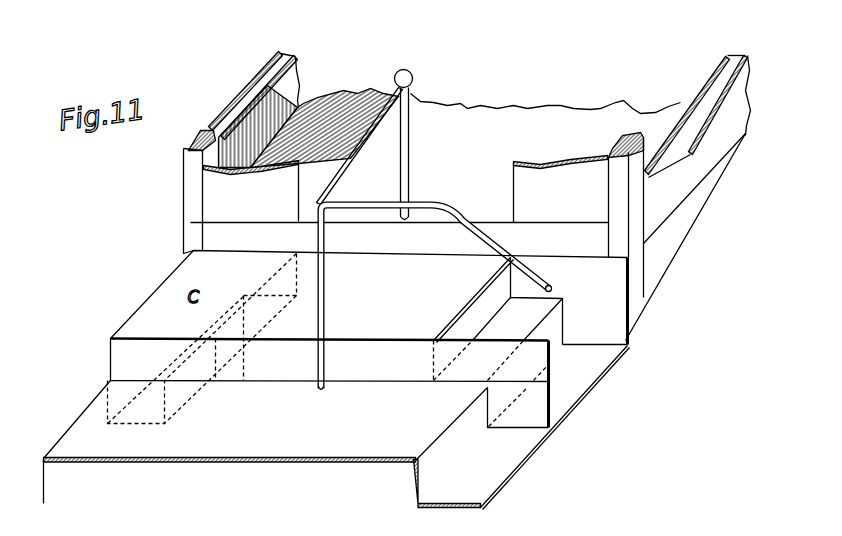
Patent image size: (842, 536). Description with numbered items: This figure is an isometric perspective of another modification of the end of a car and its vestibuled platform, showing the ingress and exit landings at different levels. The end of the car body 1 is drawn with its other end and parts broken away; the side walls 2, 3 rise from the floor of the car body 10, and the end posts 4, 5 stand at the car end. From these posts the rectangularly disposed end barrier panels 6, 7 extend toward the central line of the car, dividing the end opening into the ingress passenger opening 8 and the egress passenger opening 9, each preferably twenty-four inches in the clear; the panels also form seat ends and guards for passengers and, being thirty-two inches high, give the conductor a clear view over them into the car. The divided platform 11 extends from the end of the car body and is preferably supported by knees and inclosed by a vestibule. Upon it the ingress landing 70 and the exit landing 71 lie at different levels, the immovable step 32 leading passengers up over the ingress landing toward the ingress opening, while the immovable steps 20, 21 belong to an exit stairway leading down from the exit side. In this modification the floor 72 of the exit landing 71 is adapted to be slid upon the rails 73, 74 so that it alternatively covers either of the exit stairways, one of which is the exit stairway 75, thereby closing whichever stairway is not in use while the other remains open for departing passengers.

The end of the car body 1 is at (663, 240).
The side wall 2 is at (243, 102).
The side wall 3 is at (668, 150).
The end post 4 is at (192, 187).
The end post 5 is at (632, 207).
The end barrier panel 6 is at (251, 191).
The end barrier panel 7 is at (561, 189).
The ingress passenger opening 8 is at (360, 146).
The egress passenger opening 9 is at (435, 230).
The floor of the car body 10 is at (546, 115).
The divided platform 11 is at (270, 465).
The immovable step 20 is at (518, 301).
The immovable step 21 is at (533, 397).
The immovable step 32 is at (522, 428).
The ingress landing 70 is at (266, 442).
The exit landing 71 is at (330, 360).
The floor of the exit landing 72 is at (369, 296).
The rail 73 is at (627, 258).
The rail 74 is at (560, 345).
The exit stairway 75 is at (145, 410).